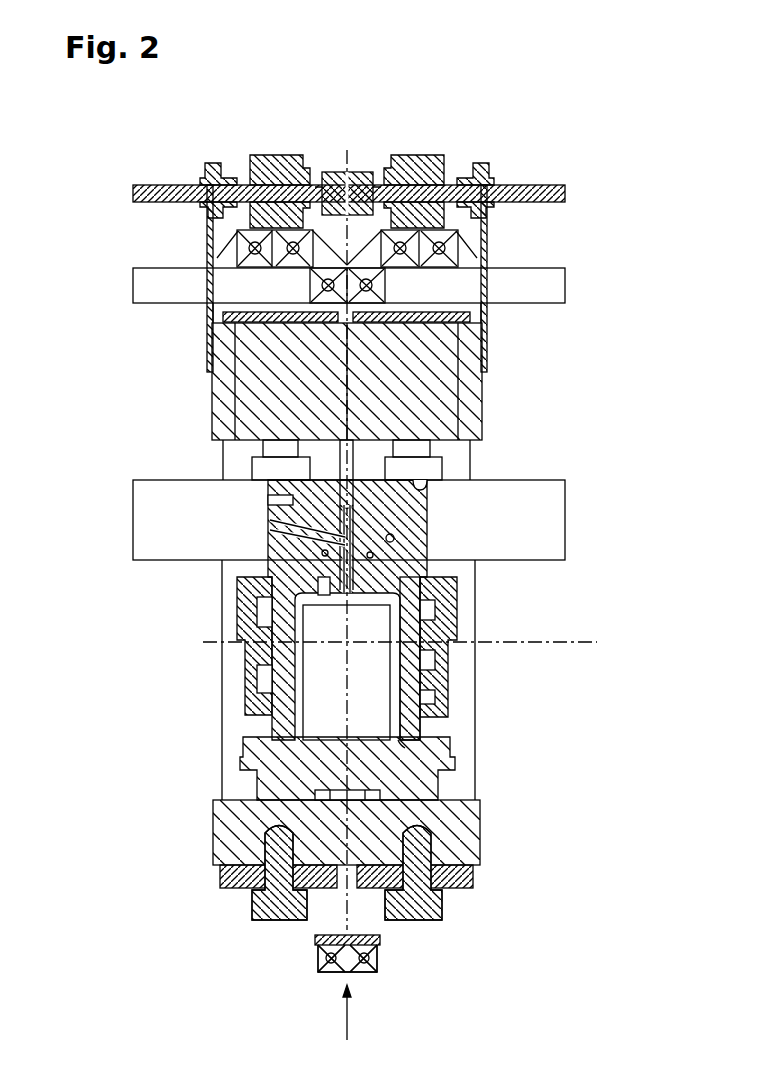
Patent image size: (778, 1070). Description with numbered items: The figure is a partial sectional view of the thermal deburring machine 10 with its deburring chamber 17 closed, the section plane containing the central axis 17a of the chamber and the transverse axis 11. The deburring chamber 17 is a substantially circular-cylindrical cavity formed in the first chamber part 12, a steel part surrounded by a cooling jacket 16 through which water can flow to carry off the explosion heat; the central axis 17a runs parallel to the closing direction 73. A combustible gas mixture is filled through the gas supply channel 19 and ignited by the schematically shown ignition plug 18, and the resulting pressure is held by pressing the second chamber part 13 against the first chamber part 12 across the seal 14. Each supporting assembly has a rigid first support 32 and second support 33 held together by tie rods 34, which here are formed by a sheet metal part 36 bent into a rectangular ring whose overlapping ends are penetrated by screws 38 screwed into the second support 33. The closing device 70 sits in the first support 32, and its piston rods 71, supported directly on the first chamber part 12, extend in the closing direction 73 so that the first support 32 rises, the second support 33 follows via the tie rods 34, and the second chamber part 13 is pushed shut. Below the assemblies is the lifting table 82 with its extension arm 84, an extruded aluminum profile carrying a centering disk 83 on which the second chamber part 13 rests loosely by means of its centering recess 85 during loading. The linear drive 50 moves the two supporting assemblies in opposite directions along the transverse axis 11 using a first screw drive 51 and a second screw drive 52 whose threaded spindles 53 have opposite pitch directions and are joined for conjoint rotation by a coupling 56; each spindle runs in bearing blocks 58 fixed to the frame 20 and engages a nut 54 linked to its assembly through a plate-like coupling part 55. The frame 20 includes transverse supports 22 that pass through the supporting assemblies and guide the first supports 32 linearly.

The thermal deburring machine 10 is at (606, 80).
The transverse axis 11 is at (590, 645).
The first chamber part 12 is at (457, 594).
The second chamber part 13 is at (265, 780).
The seal 14 is at (400, 742).
The cooling jacket 16 is at (445, 705).
The deburring chamber 17 is at (440, 665).
The central axis 17a is at (347, 683).
The ignition plug 18 is at (237, 597).
The gas supply channel 19 is at (320, 532).
The frame 20 is at (565, 286).
The transverse supports 22 is at (565, 520).
The first support 32 is at (213, 406).
The second support 33 is at (213, 834).
The tie rods 34 is at (232, 726).
The sheet metal part 36 is at (220, 879).
The screws 38 is at (265, 920).
The linear drive 50 is at (501, 111).
The first screw drive 51 is at (206, 185).
The second screw drive 52 is at (520, 184).
The threaded spindles 53 is at (133, 192).
The nut 54 is at (222, 163).
The coupling part 55 is at (207, 242).
The coupling 56 is at (350, 172).
The bearing block 58 is at (280, 155).
The closing device 70 is at (262, 466).
The piston rods 71 is at (432, 466).
The closing direction 73 is at (348, 1010).
The lifting table 82 is at (330, 972).
The centering disk 83 is at (320, 945).
The extension arm 84 is at (347, 958).
The centering recess 85 is at (397, 803).